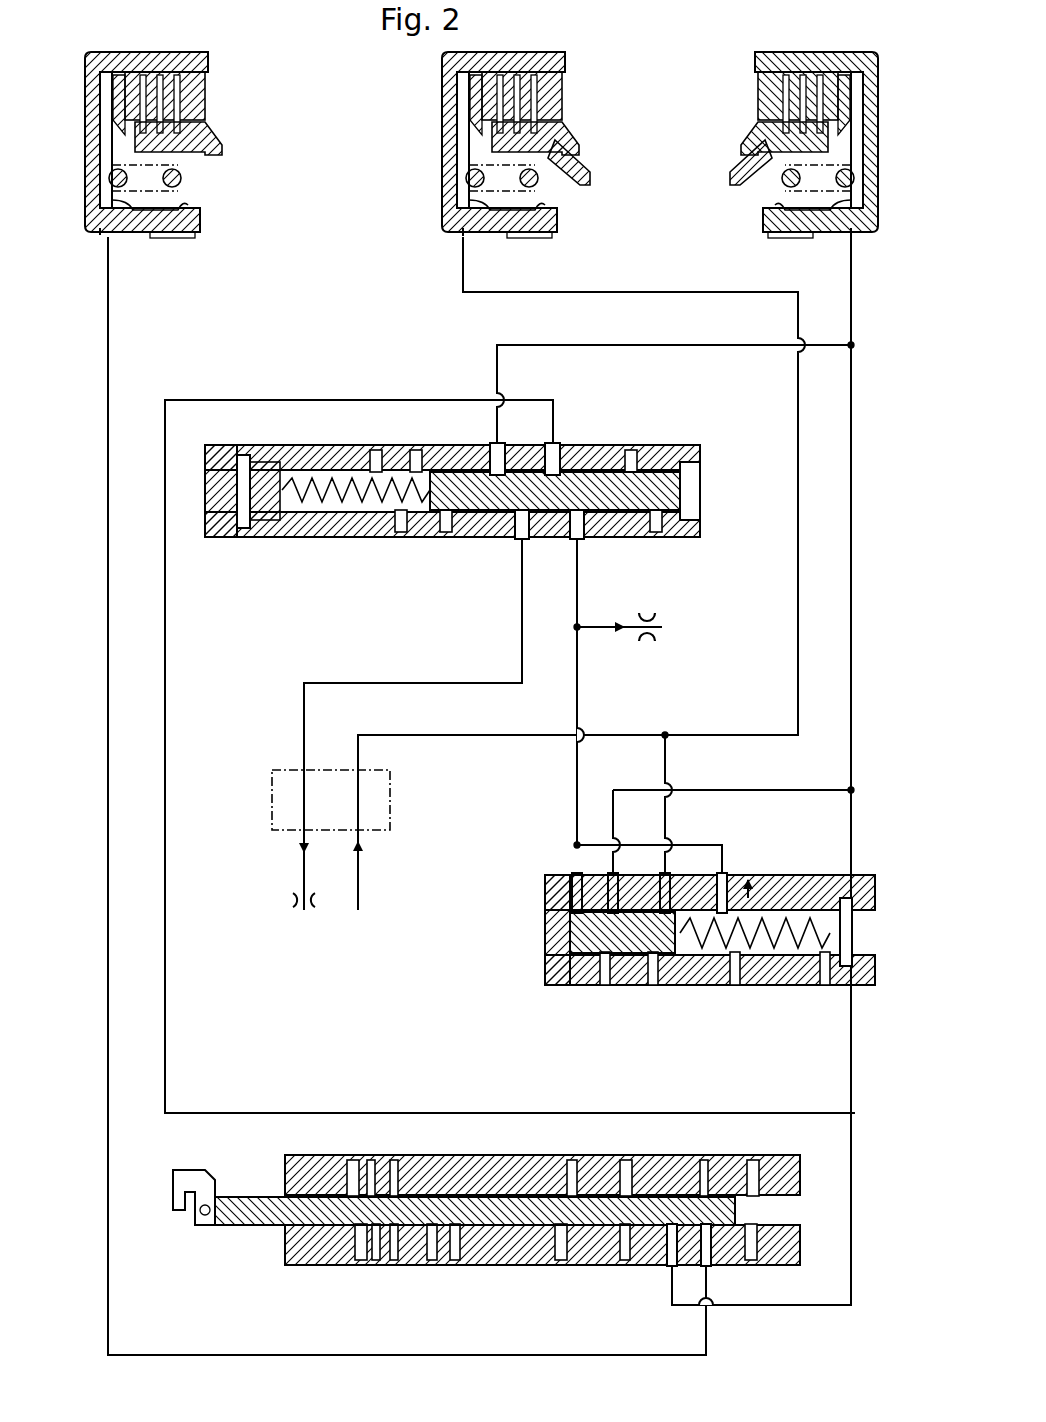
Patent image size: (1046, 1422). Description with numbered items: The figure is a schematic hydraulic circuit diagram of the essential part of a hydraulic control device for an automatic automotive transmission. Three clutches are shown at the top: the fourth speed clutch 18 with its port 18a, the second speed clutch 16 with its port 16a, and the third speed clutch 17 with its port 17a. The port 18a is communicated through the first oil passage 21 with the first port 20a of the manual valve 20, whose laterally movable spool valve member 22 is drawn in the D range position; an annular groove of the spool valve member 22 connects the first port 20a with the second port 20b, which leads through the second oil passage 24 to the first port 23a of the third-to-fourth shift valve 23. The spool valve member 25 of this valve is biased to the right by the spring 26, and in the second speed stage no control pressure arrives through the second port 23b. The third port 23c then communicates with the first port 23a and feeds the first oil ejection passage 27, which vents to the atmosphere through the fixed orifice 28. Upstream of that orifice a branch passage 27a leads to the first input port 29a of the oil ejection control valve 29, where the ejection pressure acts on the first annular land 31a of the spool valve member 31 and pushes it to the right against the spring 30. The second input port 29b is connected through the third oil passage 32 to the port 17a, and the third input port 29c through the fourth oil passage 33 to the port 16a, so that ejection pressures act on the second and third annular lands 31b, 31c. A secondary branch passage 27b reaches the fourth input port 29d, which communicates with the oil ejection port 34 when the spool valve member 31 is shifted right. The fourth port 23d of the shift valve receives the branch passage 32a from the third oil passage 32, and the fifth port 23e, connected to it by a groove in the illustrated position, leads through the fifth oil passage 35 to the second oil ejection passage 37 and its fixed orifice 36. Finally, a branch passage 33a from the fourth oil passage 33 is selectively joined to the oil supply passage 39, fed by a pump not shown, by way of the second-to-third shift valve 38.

The second speed clutch 16 is at (414, 97).
The port 16a is at (463, 237).
The third speed clutch 17 is at (718, 96).
The port 17a is at (851, 238).
The fourth speed clutch 18 is at (241, 109).
The port 18a is at (108, 236).
The manual valve 20 is at (256, 1270).
The first port 20a is at (708, 1268).
The second port 20b is at (672, 1268).
The first oil passage 21 is at (108, 355).
The spool valve member 22 is at (285, 1195).
The 3-4 shift valve 23 is at (716, 430).
The first port 23a is at (553, 453).
The second port 23b is at (682, 537).
The third port 23c is at (578, 540).
The fourth port 23d is at (497, 453).
The fifth port 23e is at (522, 540).
The second oil passage 24 is at (165, 648).
The spool valve member 25 is at (652, 470).
The spring 26 is at (270, 462).
The first oil ejection passage 27 is at (577, 582).
The branch passage 27a is at (577, 688).
The secondary branch passage 27b is at (715, 845).
The fixed orifice 28 is at (648, 612).
The oil ejection control valve 29 is at (525, 990).
The first input port 29a is at (577, 870).
The second input port 29b is at (618, 872).
The third input port 29c is at (668, 872).
The fourth input port 29d is at (728, 878).
The spring 30 is at (842, 985).
The spool valve member 31 is at (735, 985).
The first annular land 31a is at (548, 938).
The second annular land 31b is at (608, 985).
The third annular land 31c is at (655, 985).
The third oil passage 32 is at (851, 480).
The branch passage 32a is at (655, 345).
The fourth oil passage 33 is at (798, 575).
The branch passage 33a is at (480, 737).
The oil ejection port 34 is at (762, 875).
The fifth oil passage 35 is at (402, 683).
The fixed orifice 36 is at (290, 903).
The second oil ejection passage 37 is at (304, 860).
The 2-3 shift valve 38 is at (278, 770).
The oil supply passage 39 is at (358, 864).